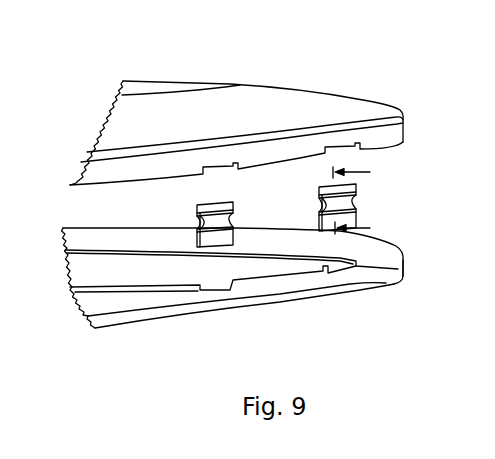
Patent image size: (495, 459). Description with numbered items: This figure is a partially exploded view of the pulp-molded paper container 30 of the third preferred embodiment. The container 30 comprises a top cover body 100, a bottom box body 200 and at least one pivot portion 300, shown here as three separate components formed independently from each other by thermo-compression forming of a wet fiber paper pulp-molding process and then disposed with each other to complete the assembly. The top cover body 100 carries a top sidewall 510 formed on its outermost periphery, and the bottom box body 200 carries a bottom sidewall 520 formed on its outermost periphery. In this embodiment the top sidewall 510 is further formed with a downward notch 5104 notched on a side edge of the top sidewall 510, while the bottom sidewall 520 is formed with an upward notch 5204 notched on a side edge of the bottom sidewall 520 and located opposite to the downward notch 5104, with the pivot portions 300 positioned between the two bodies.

The pulp-molded paper container 30 is at (148, 58).
The top cover body 100 is at (358, 108).
The top sidewall 510 is at (384, 137).
The downward notch 5104 is at (338, 150).
The pivot portion 300 is at (322, 190).
The bottom box body 200 is at (369, 288).
The bottom sidewall 520 is at (378, 267).
The upward notch 5204 is at (337, 271).